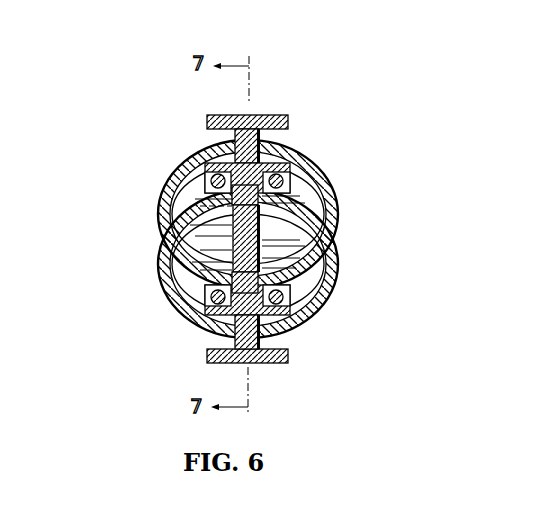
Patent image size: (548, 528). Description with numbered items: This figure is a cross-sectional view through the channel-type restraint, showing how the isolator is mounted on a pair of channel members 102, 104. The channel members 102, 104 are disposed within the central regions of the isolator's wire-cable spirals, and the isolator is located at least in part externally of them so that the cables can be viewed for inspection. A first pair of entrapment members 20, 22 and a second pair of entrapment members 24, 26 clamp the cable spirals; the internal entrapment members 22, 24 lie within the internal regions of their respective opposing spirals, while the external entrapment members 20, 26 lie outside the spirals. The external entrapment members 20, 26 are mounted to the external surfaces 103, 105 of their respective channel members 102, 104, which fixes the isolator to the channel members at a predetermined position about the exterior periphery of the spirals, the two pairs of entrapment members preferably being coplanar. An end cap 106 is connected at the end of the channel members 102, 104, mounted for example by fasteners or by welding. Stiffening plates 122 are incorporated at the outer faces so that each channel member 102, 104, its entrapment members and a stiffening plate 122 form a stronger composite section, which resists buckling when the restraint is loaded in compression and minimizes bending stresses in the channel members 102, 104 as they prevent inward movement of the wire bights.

The entrapment member 20 is at (236, 140).
The entrapment member 22 is at (205, 200).
The entrapment member 24 is at (185, 267).
The entrapment member 26 is at (233, 337).
The channel member 102 is at (210, 158).
The external surface 103 is at (262, 157).
The channel member 104 is at (195, 312).
The external surface 105 is at (262, 320).
The end cap 106 is at (180, 225).
The stiffening plate 122 is at (233, 115).